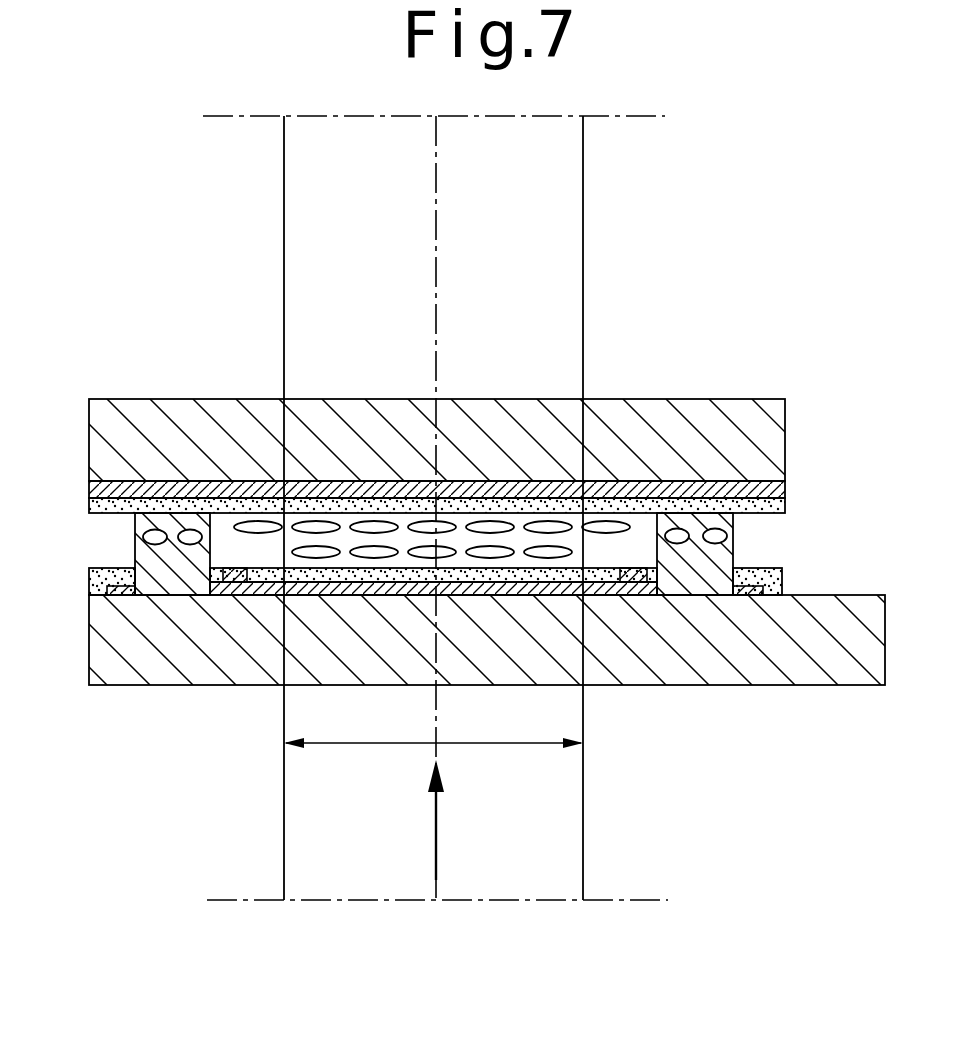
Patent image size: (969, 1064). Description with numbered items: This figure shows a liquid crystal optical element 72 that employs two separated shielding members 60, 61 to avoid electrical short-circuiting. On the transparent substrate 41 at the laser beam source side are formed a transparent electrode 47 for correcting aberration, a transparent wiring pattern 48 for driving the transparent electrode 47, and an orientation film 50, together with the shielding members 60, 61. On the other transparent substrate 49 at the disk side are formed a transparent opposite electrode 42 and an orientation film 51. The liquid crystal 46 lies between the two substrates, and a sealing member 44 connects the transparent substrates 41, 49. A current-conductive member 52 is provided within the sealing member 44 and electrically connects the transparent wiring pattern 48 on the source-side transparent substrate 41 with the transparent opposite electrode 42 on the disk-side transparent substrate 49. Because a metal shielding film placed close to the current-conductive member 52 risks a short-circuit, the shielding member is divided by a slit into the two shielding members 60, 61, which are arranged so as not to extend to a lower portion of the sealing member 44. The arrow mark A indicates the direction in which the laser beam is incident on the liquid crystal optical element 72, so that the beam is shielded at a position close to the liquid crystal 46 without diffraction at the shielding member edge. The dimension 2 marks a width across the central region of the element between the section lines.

The liquid crystal optical element 72 is at (769, 352).
The transparent substrate 41 is at (846, 676).
The transparent substrate 49 is at (620, 410).
The transparent opposite electrode 42 is at (787, 489).
The orientation film 51 is at (786, 503).
The transparent wiring pattern 48 is at (233, 570).
The current-conductive member 52 is at (135, 542).
The liquid crystal 46 is at (346, 505).
The orientation film 50 is at (783, 579).
The transparent electrode 47 is at (350, 596).
The sealing member 44 is at (135, 550).
The shielding member 60 is at (116, 596).
The shielding member 61 is at (235, 596).
The width dimension 2 is at (433, 726).
The arrow mark A is at (453, 820).